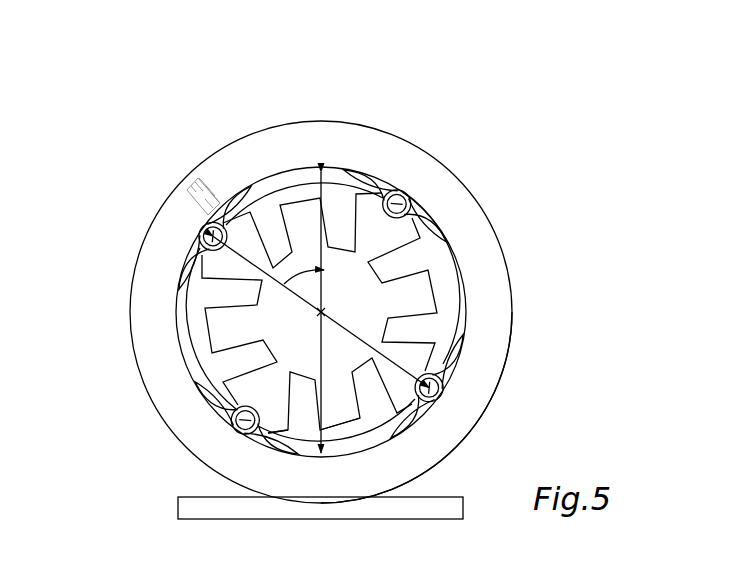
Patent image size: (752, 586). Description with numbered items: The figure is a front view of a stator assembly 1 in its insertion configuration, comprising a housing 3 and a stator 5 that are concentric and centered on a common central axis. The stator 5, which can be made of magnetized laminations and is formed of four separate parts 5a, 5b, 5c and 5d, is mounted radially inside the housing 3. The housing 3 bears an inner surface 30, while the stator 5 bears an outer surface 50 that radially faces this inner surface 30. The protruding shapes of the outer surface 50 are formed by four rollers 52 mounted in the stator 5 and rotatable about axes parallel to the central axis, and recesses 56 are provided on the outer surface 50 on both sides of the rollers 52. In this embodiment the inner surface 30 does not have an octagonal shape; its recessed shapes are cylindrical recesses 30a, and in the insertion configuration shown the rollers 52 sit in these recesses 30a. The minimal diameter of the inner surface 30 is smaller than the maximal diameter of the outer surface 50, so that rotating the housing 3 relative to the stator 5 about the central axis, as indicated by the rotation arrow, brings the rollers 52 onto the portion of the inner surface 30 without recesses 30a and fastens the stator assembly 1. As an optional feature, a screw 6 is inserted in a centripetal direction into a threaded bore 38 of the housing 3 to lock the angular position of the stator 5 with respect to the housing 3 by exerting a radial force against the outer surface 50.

The stator assembly 1 is at (472, 106).
The housing 3 is at (484, 398).
The stator 5 is at (307, 324).
The separate part of the stator 5a is at (440, 258).
The separate part of the stator 5b is at (345, 452).
The separate part of the stator 5c is at (190, 300).
The separate part of the stator 5d is at (281, 187).
The screw 6 is at (210, 184).
The inner surface 30 is at (300, 210).
The recesses 30a is at (288, 431).
The threaded bore 38 is at (192, 200).
The outer surface 50 is at (344, 156).
The rollers 52 is at (198, 236).
The recesses 56 is at (415, 192).